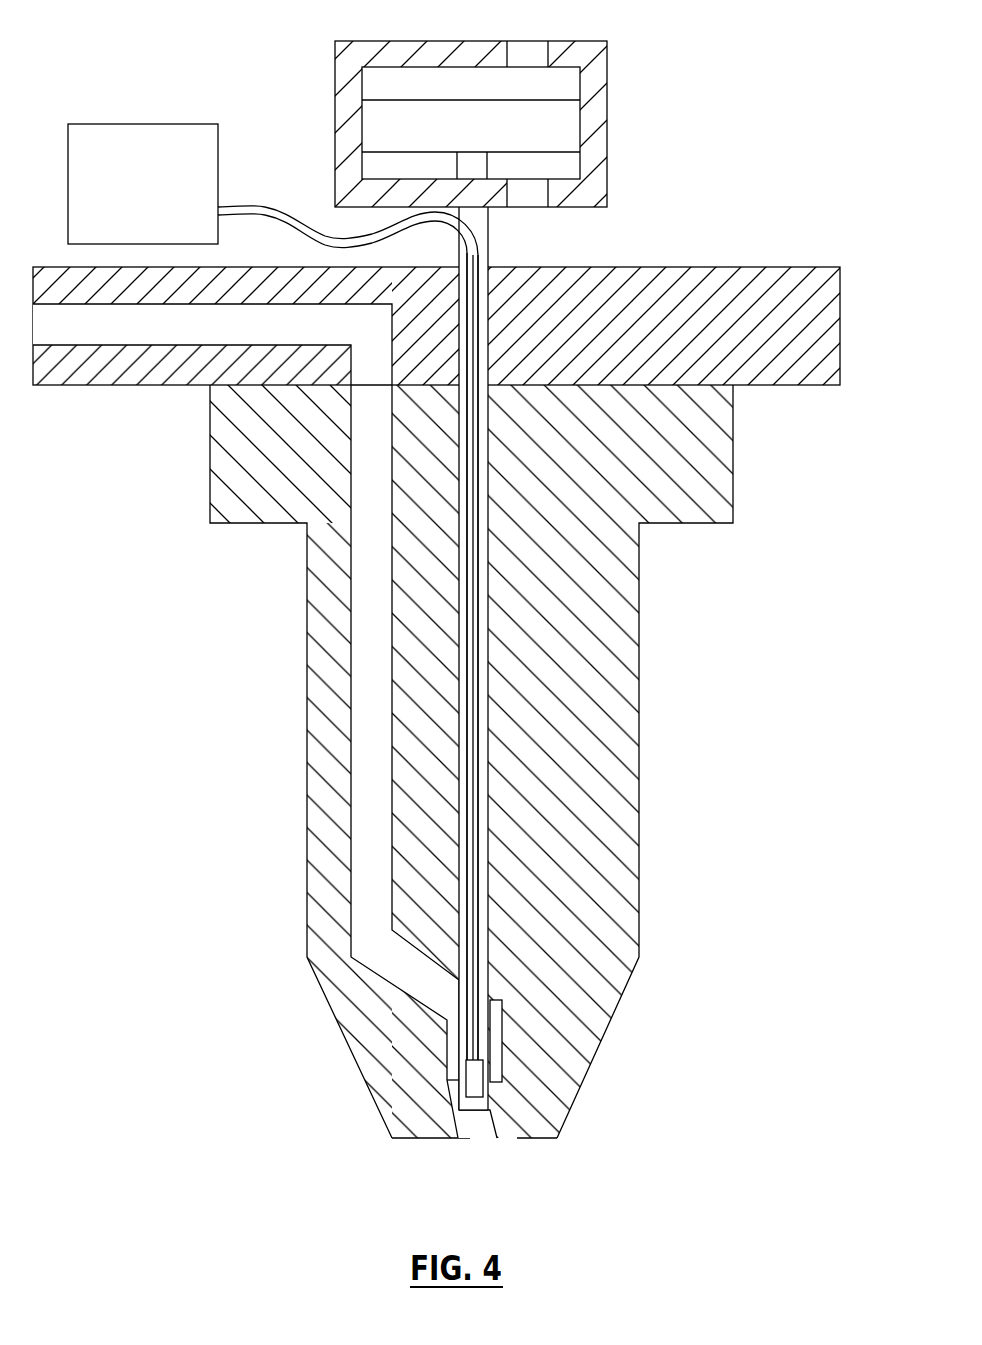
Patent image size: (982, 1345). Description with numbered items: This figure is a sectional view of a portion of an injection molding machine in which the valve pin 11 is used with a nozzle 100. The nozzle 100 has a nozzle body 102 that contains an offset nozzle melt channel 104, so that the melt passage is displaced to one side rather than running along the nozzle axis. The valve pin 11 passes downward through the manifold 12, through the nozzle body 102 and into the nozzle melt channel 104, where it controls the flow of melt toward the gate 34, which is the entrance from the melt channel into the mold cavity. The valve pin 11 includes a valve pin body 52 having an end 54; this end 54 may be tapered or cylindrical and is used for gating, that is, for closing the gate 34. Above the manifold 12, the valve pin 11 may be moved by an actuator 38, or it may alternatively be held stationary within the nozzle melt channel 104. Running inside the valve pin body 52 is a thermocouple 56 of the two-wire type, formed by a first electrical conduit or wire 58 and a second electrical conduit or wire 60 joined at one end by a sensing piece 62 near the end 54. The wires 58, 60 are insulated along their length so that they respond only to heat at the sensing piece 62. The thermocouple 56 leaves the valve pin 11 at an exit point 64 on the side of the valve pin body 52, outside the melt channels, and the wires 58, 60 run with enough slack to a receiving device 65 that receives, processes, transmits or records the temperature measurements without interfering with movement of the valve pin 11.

The manifold block 12 is at (683, 287).
The actuator 38 is at (632, 77).
The nozzle 100 is at (686, 156).
The receiving device 65 is at (120, 124).
The exit point 64 is at (363, 226).
The valve pin body 52 is at (482, 565).
The nozzle body 102 is at (608, 637).
The thermocouple 56 is at (478, 687).
The second electrical conduit 60 is at (472, 788).
The valve pin 11 is at (483, 850).
The first electrical conduit 58 is at (478, 935).
The offset nozzle melt channel 104 is at (360, 848).
The sensing piece 62 is at (480, 1087).
The end 54 is at (480, 1111).
The gate 34 is at (470, 1139).